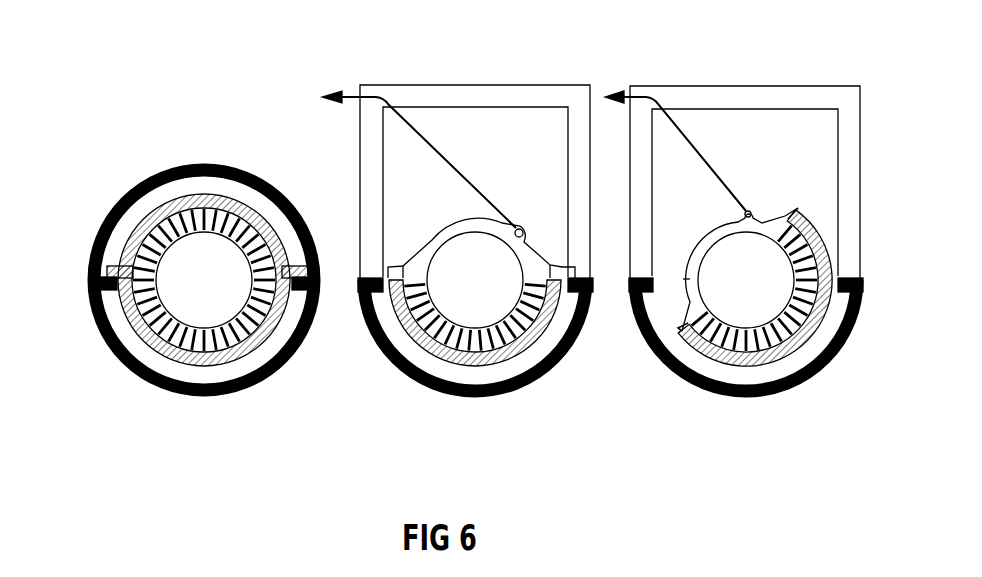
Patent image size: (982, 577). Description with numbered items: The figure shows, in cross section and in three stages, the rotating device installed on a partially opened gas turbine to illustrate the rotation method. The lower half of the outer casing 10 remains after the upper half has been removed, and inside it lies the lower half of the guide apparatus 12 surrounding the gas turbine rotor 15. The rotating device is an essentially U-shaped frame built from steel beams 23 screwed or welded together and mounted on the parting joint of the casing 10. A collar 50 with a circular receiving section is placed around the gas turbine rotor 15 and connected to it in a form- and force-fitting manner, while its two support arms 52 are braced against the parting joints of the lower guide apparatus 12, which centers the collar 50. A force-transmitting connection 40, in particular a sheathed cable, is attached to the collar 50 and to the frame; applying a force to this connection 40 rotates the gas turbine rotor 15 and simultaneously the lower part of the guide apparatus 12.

The casing 10 is at (153, 387).
The guide apparatus 12 is at (133, 328).
The gas turbine rotor 15 is at (194, 285).
The steel beams 23 is at (467, 87).
The force-transmitting connection 40 is at (447, 157).
The collar 50 is at (455, 223).
The support arms 52 is at (797, 207).